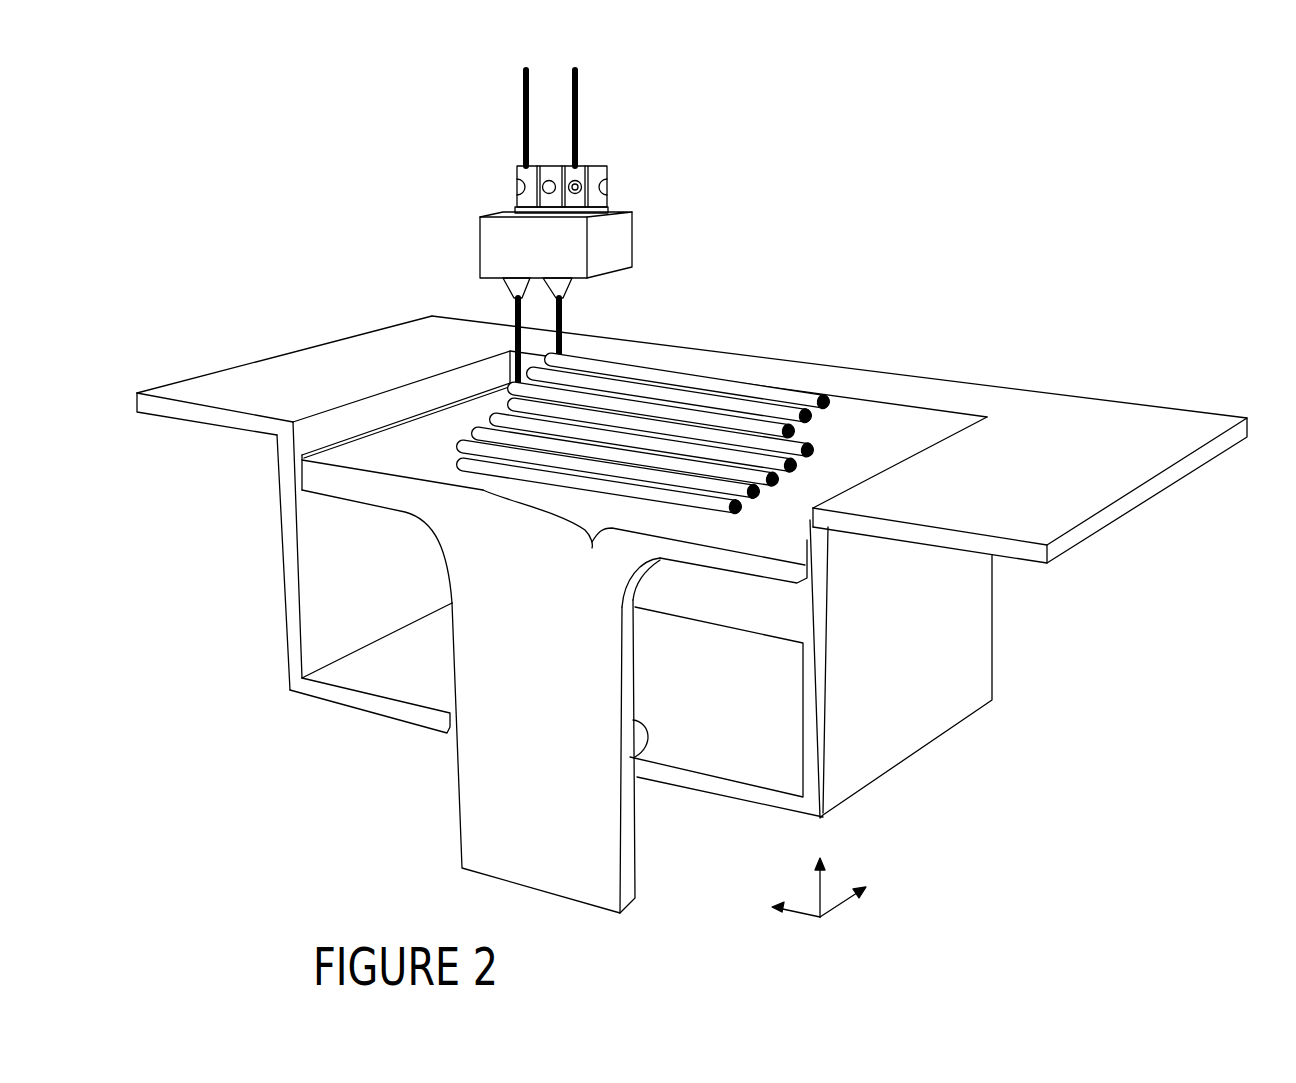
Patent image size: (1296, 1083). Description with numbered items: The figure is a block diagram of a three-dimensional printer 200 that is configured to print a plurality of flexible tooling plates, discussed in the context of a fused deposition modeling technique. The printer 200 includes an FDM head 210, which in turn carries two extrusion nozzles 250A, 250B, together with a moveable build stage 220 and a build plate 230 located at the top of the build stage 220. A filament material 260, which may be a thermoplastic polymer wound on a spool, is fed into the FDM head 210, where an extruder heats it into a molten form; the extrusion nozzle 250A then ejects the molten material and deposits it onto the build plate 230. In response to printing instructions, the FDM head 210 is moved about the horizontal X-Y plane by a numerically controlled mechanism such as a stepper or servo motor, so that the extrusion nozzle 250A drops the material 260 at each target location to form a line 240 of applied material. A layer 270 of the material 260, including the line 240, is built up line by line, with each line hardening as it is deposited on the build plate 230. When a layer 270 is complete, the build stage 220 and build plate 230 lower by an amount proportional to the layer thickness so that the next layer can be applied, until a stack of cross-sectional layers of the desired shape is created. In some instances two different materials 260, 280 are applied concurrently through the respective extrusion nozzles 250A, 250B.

The 3-D printer 200 is at (240, 170).
The FDM head 210 is at (618, 210).
The moveable build stage 220 is at (557, 748).
The build plate 230 is at (883, 455).
The line of applied material 240 is at (768, 382).
The extrusion nozzle 250A is at (508, 288).
The extrusion nozzle 250B is at (566, 300).
The filament material 260 is at (520, 138).
The layer of material 270 is at (592, 548).
The second material 280 is at (580, 130).